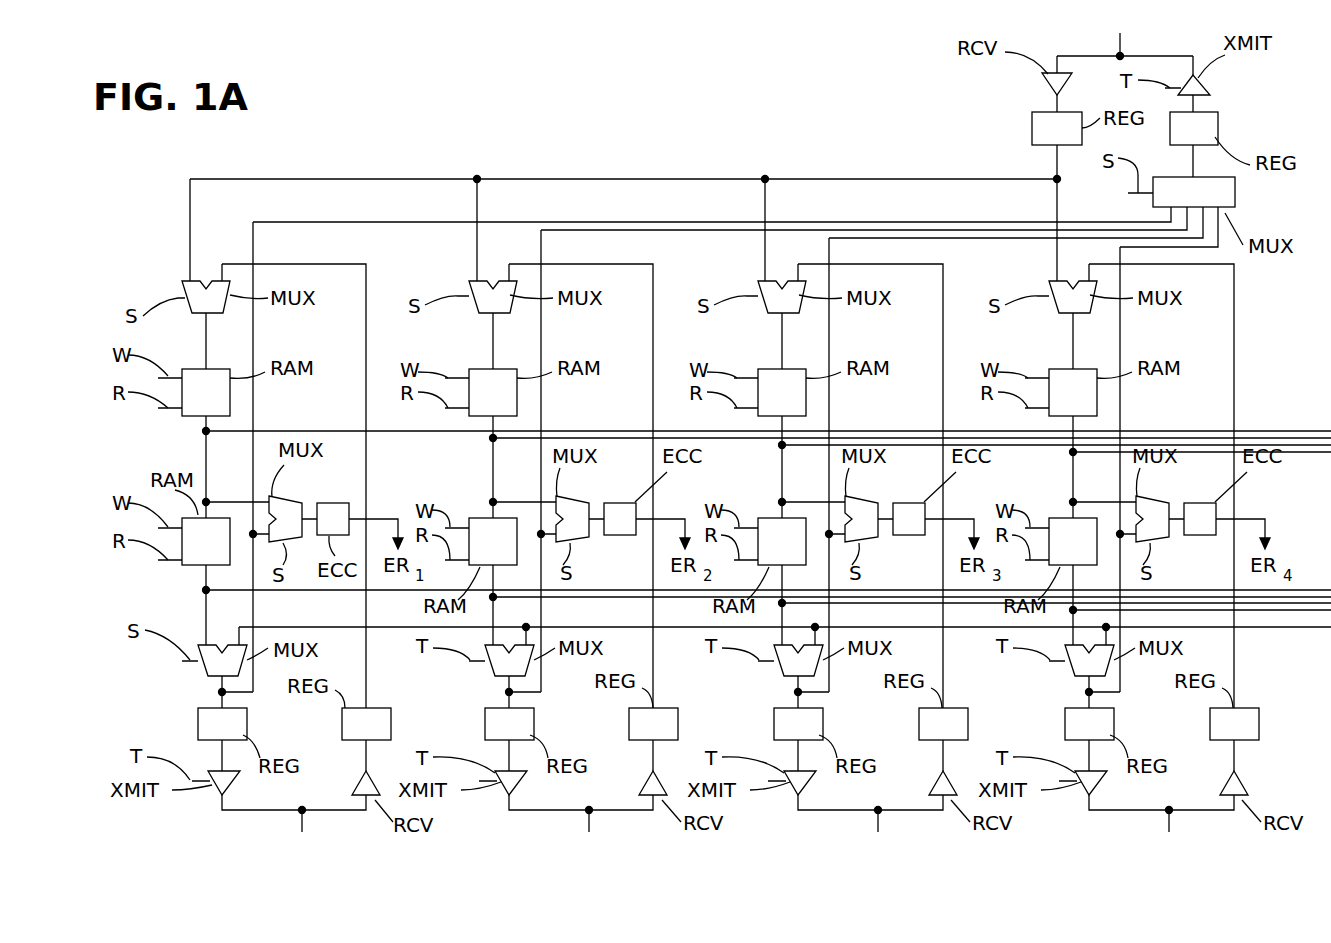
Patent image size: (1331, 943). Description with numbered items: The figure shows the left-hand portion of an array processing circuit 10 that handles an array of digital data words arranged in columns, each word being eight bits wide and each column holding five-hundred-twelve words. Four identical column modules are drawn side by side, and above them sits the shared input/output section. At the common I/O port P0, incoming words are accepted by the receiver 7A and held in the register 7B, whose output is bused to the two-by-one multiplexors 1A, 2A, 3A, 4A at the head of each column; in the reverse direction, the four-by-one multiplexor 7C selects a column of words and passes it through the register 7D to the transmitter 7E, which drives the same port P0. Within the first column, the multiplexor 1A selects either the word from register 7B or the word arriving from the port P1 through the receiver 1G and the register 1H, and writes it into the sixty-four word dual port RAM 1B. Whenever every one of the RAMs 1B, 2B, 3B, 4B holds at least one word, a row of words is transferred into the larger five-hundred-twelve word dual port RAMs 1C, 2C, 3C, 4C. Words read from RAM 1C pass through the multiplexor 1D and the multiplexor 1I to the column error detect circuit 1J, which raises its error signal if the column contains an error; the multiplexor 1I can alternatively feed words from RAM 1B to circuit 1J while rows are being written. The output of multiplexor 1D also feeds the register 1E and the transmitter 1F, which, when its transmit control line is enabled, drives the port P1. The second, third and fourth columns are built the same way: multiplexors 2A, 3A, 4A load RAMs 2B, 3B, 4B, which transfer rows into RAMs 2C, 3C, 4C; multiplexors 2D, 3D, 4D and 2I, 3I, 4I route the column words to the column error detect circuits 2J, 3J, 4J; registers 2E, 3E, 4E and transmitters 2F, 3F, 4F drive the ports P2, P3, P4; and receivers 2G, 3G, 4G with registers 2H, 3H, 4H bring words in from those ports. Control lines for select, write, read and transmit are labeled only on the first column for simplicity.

The array processing circuit 10 is at (805, 130).
The 2 × 1 multiplexor 1A is at (185, 292).
The dual port RAM 1B is at (190, 420).
The dual port RAM 1C is at (195, 568).
The 2 × 1 multiplexor 1D is at (202, 677).
The register 1E is at (198, 732).
The transmitter 1F is at (215, 798).
The receiver 1G is at (358, 783).
The register 1H is at (342, 730).
The 2 × 1 multiplexor 1I is at (288, 497).
The column error detect circuit 1J is at (332, 505).
The 2 × 1 multiplexor 2A is at (470, 290).
The dual port RAM 2B is at (470, 368).
The dual port RAM 2C is at (472, 516).
The 2 × 1 multiplexor 2D is at (488, 677).
The register 2E is at (485, 732).
The transmitter 2F is at (502, 797).
The receiver 2G is at (646, 783).
The register 2H is at (629, 730).
The 2 × 1 multiplexor 2I is at (573, 498).
The column error detect circuit 2J is at (618, 535).
The 2 × 1 multiplexor 3A is at (759, 290).
The dual port RAM 3B is at (759, 368).
The dual port RAM 3C is at (761, 516).
The 2 × 1 multiplexor 3D is at (777, 677).
The register 3E is at (774, 732).
The transmitter 3F is at (791, 797).
The receiver 3G is at (935, 783).
The register 3H is at (918, 730).
The 2 × 1 multiplexor 3I is at (862, 498).
The column error detect circuit 3J is at (907, 535).
The 2 × 1 multiplexor 4A is at (1050, 290).
The dual port RAM 4B is at (1050, 368).
The dual port RAM 4C is at (1052, 516).
The 2 × 1 multiplexor 4D is at (1068, 677).
The register 4E is at (1065, 732).
The transmitter 4F is at (1082, 797).
The receiver 4G is at (1226, 783).
The register 4H is at (1209, 730).
The 2 × 1 multiplexor 4I is at (1153, 498).
The column error detect circuit 4J is at (1198, 535).
The receiver 7A is at (1045, 80).
The register 7B is at (1032, 128).
The 4 × 1 multiplexor 7C is at (1235, 195).
The register 7D is at (1218, 128).
The transmitter 7E is at (1210, 88).
The I/O port P0 is at (1122, 42).
The port P1 is at (305, 822).
The port P2 is at (592, 822).
The port P3 is at (881, 822).
The port P4 is at (1172, 822).